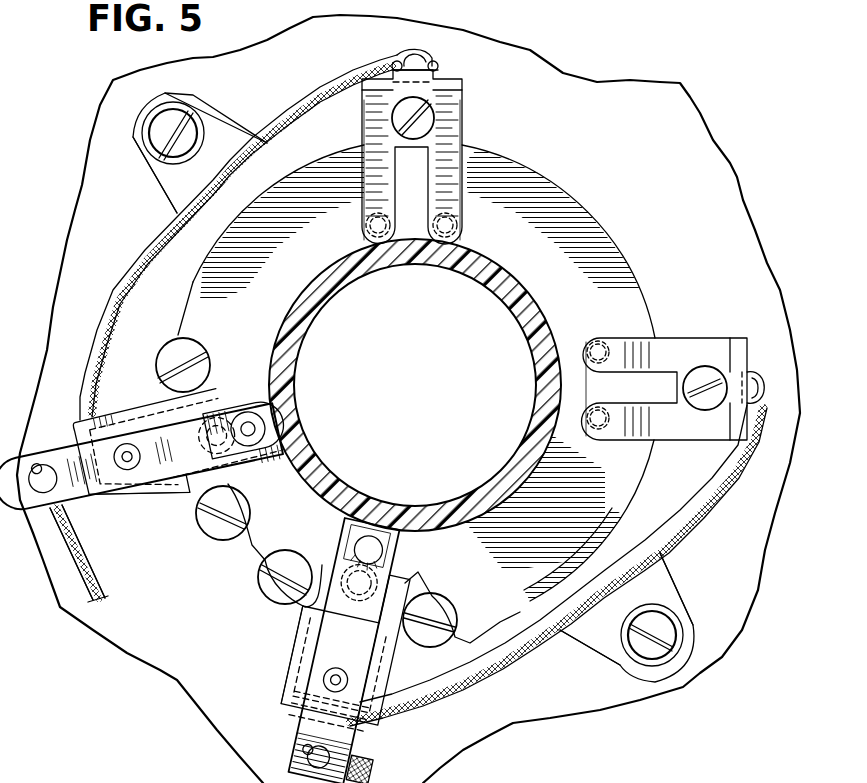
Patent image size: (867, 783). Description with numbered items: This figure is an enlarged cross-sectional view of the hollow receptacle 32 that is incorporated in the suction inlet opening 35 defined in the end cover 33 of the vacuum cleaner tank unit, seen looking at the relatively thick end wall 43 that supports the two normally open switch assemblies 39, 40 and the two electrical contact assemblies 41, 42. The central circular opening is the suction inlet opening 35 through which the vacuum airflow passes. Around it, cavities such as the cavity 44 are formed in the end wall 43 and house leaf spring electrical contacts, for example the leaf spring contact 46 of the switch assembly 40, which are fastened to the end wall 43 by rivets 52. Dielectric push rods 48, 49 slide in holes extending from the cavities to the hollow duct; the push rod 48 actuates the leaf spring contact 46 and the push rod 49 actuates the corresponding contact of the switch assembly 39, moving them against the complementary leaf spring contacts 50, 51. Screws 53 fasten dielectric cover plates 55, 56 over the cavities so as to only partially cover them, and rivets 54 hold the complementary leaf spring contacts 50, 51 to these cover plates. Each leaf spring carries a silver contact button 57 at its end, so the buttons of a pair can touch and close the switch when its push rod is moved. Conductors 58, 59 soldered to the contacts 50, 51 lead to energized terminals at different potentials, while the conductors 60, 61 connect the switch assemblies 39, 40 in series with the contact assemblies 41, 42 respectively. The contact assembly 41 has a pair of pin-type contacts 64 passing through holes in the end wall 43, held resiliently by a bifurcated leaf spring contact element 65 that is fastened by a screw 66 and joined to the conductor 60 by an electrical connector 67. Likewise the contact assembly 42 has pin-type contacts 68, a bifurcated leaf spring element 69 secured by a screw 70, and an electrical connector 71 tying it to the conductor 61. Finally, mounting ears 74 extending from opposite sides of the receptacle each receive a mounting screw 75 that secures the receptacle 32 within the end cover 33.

The hollow receptacle member 32 is at (247, 587).
The end cover 33 is at (736, 200).
The suction inlet opening 35 is at (496, 322).
The switch assembly 39 is at (121, 516).
The switch assembly 40 is at (280, 695).
The electrical contact assembly 41 is at (466, 110).
The electrical contact assembly 42 is at (671, 336).
The end wall 43 is at (545, 190).
The cavity 44 is at (347, 550).
The leaf spring electrical contact 46 is at (352, 657).
The push rod 48 is at (378, 580).
The push rod 49 is at (200, 430).
The leaf spring contact 50 is at (350, 743).
The leaf spring contact 51 is at (226, 398).
The rivets 52 is at (333, 680).
The screws 53 is at (176, 352).
The rivets 54 is at (129, 470).
The cover plate 55 is at (304, 627).
The cover plate 56 is at (190, 490).
The contact buttons 57 is at (262, 428).
The conductor 58 is at (370, 776).
The conductor 59 is at (92, 600).
The conductor 60 is at (143, 262).
The conductor 61 is at (545, 632).
The pin-type electrical contacts 64 is at (372, 220).
The bifurcated leaf spring electrical contact element 65 is at (448, 108).
The screw 66 is at (398, 119).
The electrical connector 67 is at (438, 62).
The pin-type electrical contacts 68 is at (600, 344).
The bifurcated leaf spring electrical contact element 69 is at (700, 432).
The screw 70 is at (705, 375).
The electrical connector 71 is at (755, 370).
The mounting ears 74 is at (215, 122).
The mounting screws 75 is at (172, 128).